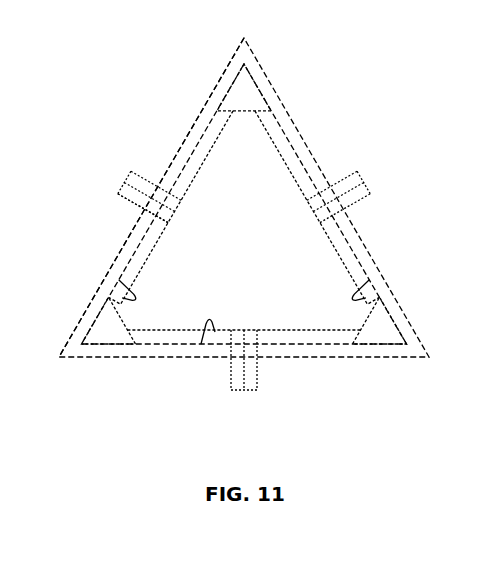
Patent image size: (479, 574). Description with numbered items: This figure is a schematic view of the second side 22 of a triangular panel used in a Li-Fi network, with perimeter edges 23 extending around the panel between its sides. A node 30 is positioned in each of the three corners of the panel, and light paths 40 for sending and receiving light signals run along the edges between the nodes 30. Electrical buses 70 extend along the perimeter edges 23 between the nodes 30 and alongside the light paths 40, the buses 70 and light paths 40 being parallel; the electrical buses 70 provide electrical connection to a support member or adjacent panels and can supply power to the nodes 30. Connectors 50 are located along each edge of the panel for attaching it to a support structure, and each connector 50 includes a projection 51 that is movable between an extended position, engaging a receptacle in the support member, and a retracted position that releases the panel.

The second side 22 is at (304, 130).
The perimeter edges 23 is at (186, 140).
The node 30 is at (250, 90).
The light path 40 is at (137, 293).
The connector 50 is at (137, 182).
The projection 51 is at (120, 190).
The electrical bus 70 is at (137, 254).